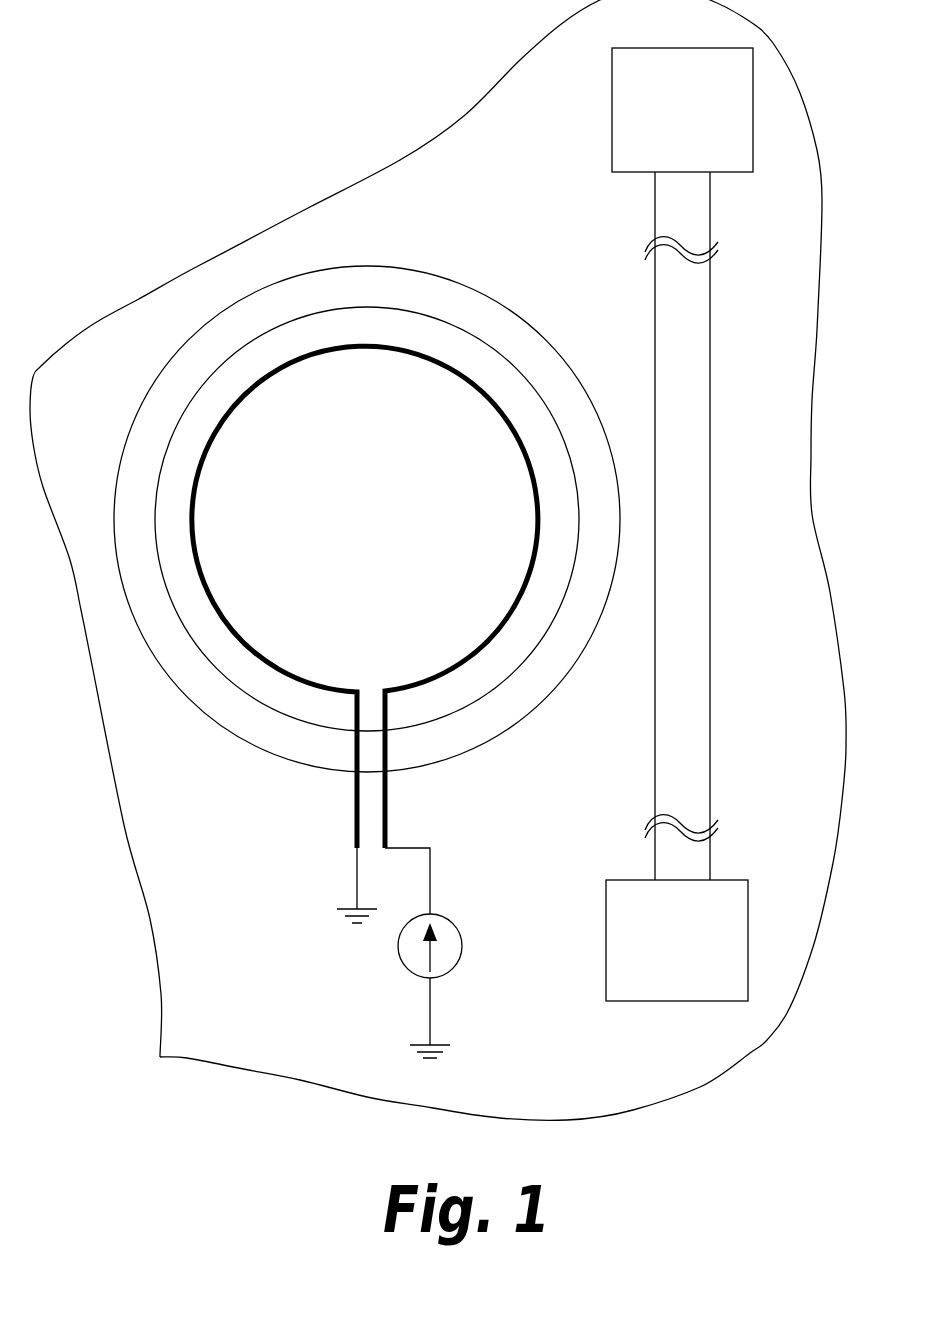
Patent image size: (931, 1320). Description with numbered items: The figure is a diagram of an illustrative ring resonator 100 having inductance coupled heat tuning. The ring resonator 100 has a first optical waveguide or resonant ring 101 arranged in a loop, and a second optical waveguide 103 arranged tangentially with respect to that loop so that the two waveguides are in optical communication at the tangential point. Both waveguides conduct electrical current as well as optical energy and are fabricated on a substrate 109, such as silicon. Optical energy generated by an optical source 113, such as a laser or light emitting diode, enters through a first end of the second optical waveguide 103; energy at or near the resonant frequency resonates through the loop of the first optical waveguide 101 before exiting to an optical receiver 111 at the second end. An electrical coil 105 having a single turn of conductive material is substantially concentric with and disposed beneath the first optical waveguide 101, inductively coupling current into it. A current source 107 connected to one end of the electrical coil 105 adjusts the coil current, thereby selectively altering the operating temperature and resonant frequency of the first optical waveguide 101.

The ring resonator 100 is at (131, 174).
The first optical waveguide 101 is at (152, 444).
The second optical waveguide 103 is at (688, 285).
The electrical coil 105 is at (540, 497).
The current source 107 is at (451, 952).
The substrate 109 is at (510, 166).
The optical receiver 111 is at (740, 164).
The optical source 113 is at (738, 993).